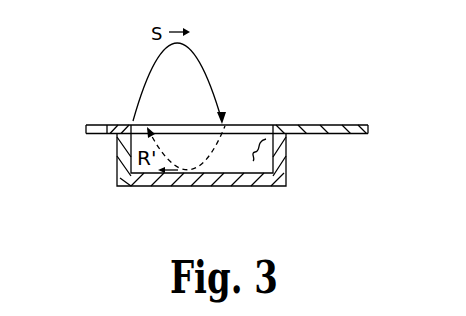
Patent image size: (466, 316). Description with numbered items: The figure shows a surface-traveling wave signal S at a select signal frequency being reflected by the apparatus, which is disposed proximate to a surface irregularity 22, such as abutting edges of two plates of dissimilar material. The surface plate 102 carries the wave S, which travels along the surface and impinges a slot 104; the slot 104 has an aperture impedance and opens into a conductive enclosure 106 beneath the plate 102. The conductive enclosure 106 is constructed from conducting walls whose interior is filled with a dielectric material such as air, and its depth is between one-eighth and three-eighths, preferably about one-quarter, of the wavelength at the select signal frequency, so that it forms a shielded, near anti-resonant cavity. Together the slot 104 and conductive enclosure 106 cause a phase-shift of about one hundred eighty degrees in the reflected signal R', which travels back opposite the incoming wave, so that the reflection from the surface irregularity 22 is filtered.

The substrate plate 102 is at (116, 125).
The slot 104 is at (250, 124).
The conductive enclosure 106 is at (259, 152).
The surface irregularity 22 is at (302, 121).